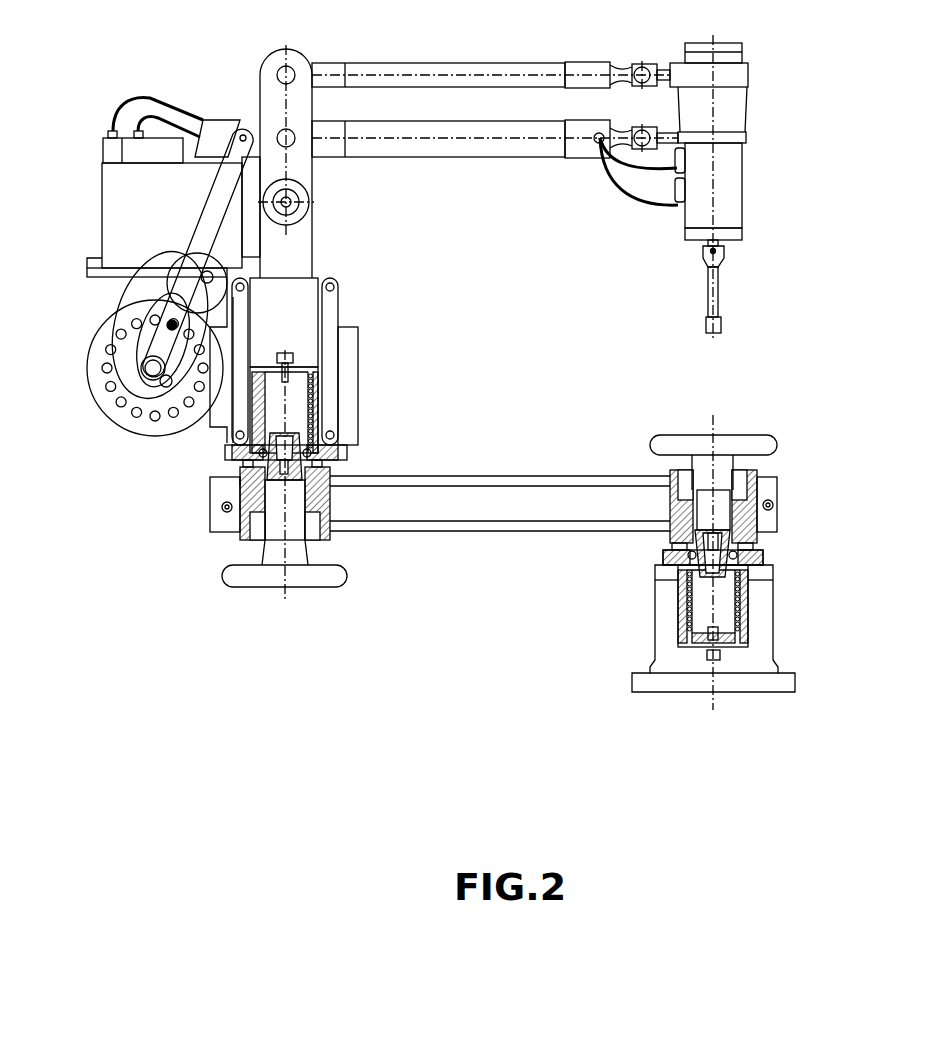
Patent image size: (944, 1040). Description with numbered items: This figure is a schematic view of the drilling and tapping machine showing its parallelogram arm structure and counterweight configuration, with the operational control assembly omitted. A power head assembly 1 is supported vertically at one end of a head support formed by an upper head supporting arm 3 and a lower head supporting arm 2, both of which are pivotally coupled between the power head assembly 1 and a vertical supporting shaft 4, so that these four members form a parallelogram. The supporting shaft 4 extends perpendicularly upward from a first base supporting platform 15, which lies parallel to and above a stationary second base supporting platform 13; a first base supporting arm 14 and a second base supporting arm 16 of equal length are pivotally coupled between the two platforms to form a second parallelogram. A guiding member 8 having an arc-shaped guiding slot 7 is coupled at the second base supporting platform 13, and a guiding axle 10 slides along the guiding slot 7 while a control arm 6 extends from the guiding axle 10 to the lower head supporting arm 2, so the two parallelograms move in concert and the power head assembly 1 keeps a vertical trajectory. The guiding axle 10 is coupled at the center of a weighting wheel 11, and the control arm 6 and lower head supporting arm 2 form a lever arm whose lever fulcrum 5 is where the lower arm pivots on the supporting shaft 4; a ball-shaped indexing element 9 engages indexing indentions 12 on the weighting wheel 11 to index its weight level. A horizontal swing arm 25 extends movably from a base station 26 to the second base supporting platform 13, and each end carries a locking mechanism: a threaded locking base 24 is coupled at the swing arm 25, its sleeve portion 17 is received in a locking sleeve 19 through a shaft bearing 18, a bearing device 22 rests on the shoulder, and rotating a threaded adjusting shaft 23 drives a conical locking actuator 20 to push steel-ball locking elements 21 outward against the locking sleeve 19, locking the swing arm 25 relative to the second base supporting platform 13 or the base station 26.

The power head assembly 1 is at (732, 183).
The lower head supporting arm 2 is at (457, 130).
The upper head supporting arm 3 is at (428, 68).
The supporting shaft 4 is at (267, 85).
The lever fulcrum 5 is at (277, 133).
The control arm 6 is at (233, 167).
The arc-shaped guiding slot 7 is at (140, 287).
The guiding member 8 is at (165, 285).
The indexing element 9 is at (172, 325).
The guiding axle 10 is at (150, 368).
The weighting wheel 11 is at (112, 408).
The indexing indentions 12 is at (138, 417).
The second base supporting platform 13 is at (220, 438).
The first base supporting arm 14 is at (240, 313).
The first base supporting platform 15 is at (303, 290).
The second base supporting arm 16 is at (327, 307).
The sleeve portion 17 is at (317, 370).
The shaft bearing 18 is at (318, 403).
The locking sleeve 19 is at (318, 425).
The locking actuator 20 is at (297, 442).
The locking elements 21 is at (307, 453).
The bearing device 22 is at (337, 460).
The threaded adjusting shaft 23 is at (297, 538).
The threaded locking base 24 is at (325, 508).
The swing arm 25 is at (453, 510).
The base station 26 is at (770, 637).